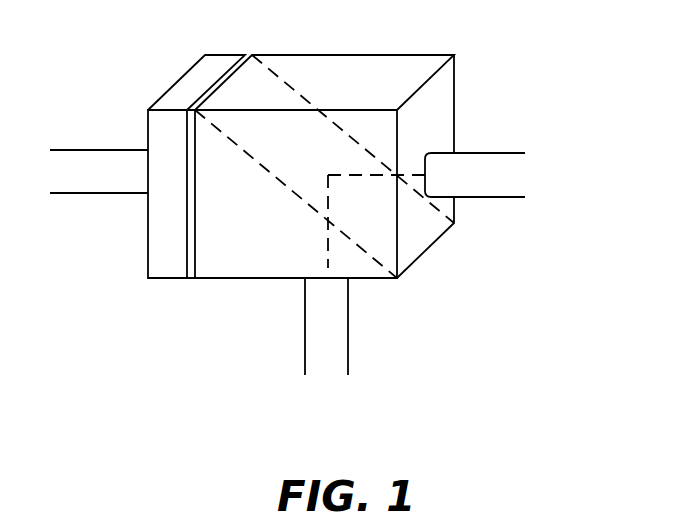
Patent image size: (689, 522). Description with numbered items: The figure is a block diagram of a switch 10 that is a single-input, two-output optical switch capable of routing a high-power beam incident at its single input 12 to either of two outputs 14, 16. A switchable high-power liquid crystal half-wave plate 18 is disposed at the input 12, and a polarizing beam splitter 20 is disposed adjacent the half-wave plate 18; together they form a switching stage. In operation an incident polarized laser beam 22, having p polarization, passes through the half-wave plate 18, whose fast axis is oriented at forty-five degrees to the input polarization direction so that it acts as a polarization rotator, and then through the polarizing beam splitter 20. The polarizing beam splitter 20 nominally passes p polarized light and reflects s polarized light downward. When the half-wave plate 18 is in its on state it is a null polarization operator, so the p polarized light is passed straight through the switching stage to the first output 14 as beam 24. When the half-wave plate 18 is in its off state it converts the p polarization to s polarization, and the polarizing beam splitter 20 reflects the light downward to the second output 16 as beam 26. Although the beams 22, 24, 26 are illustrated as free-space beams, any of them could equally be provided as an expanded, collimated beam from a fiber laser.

The switch 10 is at (503, 48).
The input 12 is at (147, 228).
The output 14 is at (447, 117).
The output 16 is at (252, 280).
The switchable high-power liquid crystal half-wave plate 18 is at (226, 58).
The polarizing beam splitter 20 is at (405, 72).
The incident polarized laser beam 22 is at (55, 188).
The beam 24 is at (515, 199).
The beam 26 is at (318, 358).